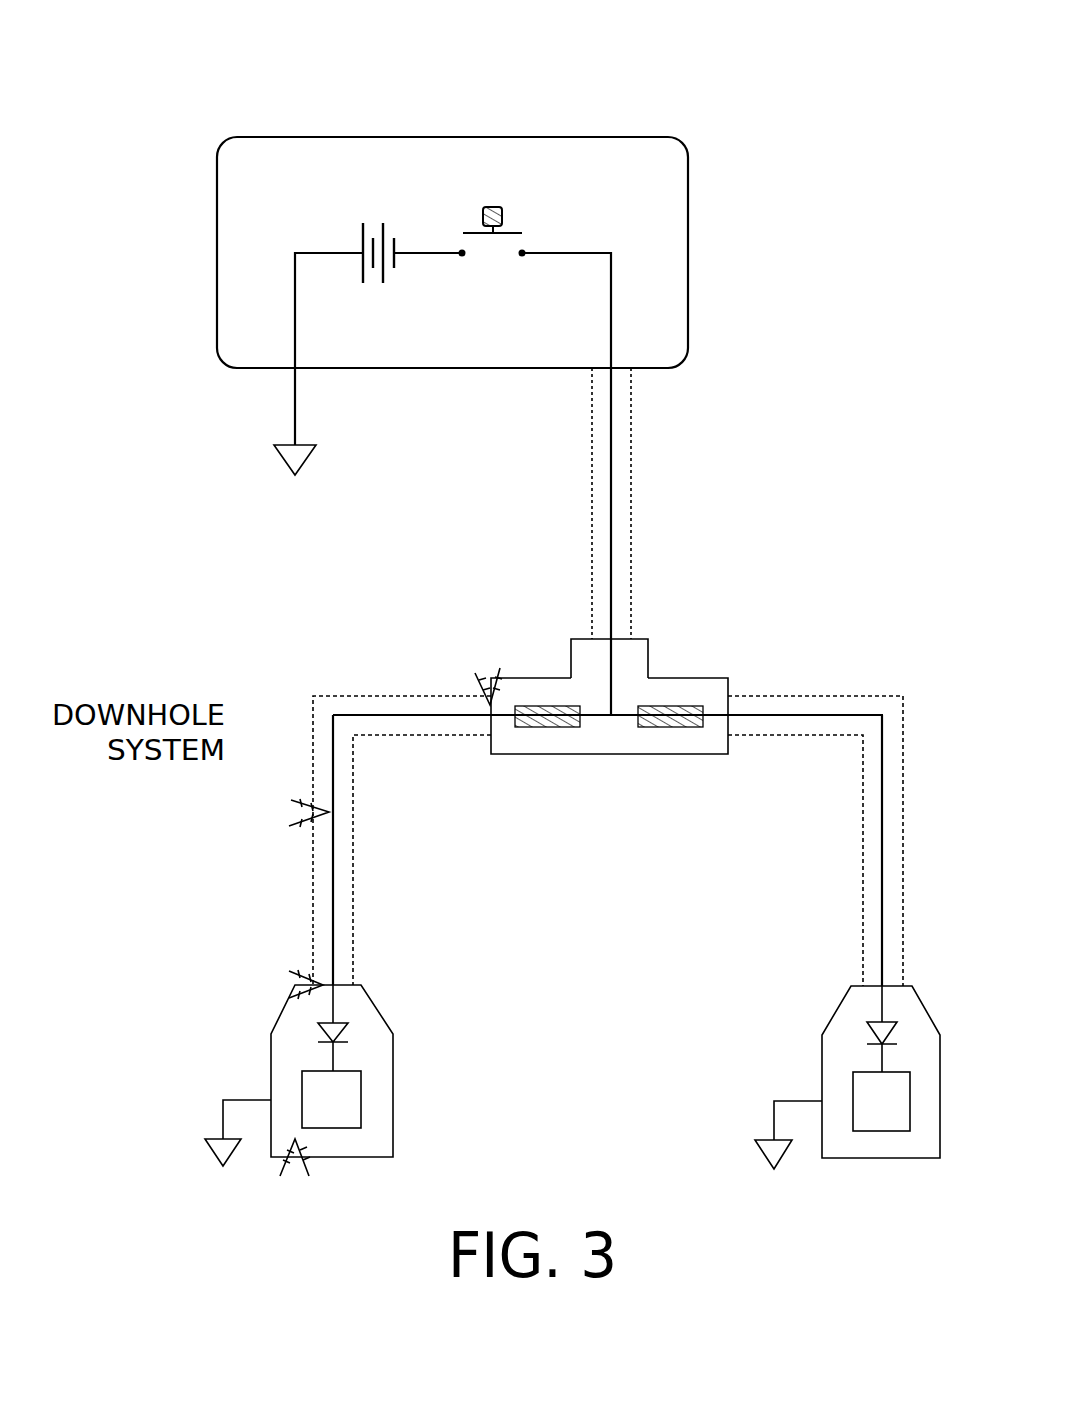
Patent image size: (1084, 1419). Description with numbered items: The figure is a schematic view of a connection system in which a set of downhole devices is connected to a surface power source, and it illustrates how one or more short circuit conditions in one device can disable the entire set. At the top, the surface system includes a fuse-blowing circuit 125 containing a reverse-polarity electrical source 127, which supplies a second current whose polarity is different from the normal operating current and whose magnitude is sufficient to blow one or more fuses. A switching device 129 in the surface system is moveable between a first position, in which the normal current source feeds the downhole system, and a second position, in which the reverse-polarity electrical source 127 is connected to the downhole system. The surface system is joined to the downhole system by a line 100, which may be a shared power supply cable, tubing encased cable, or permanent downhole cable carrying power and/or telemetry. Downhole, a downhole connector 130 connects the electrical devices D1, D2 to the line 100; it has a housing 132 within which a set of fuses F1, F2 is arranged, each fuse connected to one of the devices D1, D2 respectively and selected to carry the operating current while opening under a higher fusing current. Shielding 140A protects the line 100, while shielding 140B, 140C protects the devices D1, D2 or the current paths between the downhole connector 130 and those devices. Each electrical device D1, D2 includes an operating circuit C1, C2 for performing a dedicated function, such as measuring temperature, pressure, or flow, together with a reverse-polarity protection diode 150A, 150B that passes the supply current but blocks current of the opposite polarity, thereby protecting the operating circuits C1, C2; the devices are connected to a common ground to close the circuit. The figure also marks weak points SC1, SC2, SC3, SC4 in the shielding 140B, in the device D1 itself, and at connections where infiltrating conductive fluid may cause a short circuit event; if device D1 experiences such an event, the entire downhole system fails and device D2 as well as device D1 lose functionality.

The line 100 is at (613, 525).
The fuse-blowing circuit 125 is at (693, 177).
The reverse-polarity electrical source 127 is at (333, 232).
The switching device 129 is at (513, 219).
The downhole connector 130 is at (650, 660).
The housing 132 is at (530, 687).
The shielding 140A is at (591, 584).
The shielding 140B is at (354, 862).
The shielding 140C is at (860, 867).
The reverse-polarity protection diode 150A is at (354, 1035).
The reverse-polarity protection diode 150B is at (855, 1033).
The fuse F1 is at (545, 732).
The fuse F2 is at (668, 732).
The weak point SC1 is at (462, 681).
The weak point SC2 is at (282, 812).
The weak point SC3 is at (279, 989).
The weak point SC4 is at (300, 1179).
The operating circuit C1 is at (331, 1101).
The operating circuit C2 is at (881, 1102).
The electrical device D1 is at (388, 1131).
The electrical device D2 is at (871, 1146).